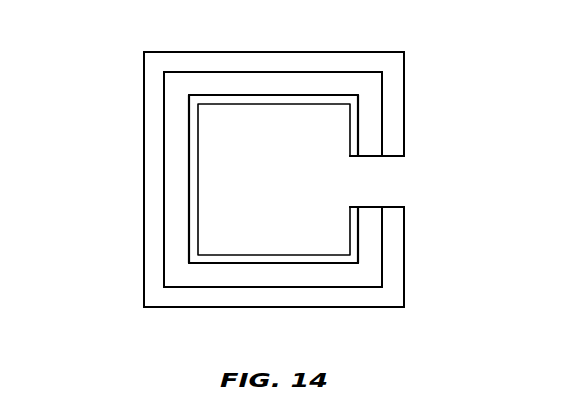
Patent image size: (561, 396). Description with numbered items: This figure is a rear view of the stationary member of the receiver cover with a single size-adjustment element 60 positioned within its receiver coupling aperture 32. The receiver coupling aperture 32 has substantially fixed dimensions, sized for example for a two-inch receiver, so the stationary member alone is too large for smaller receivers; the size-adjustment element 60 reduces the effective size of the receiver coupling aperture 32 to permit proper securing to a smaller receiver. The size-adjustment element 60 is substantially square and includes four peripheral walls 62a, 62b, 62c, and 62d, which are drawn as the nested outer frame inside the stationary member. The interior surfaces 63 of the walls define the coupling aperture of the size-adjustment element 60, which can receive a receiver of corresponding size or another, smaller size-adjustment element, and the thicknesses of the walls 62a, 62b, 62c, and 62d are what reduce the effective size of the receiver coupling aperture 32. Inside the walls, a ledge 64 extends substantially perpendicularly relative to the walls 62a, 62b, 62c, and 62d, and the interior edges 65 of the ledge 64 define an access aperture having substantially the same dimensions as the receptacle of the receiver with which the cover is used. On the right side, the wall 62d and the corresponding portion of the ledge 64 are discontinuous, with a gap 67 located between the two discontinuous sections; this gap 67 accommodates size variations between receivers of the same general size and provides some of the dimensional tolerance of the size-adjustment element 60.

The receiver coupling aperture 32 is at (213, 71).
The size-adjustment element 60 is at (367, 73).
The peripheral wall 62a is at (293, 83).
The peripheral wall 62b is at (175, 192).
The peripheral wall 62c is at (255, 275).
The peripheral wall 62d is at (370, 118).
The interior surfaces 63 is at (220, 96).
The ledge 64 is at (195, 180).
The interior edges 65 is at (200, 143).
The gap 67 is at (383, 185).